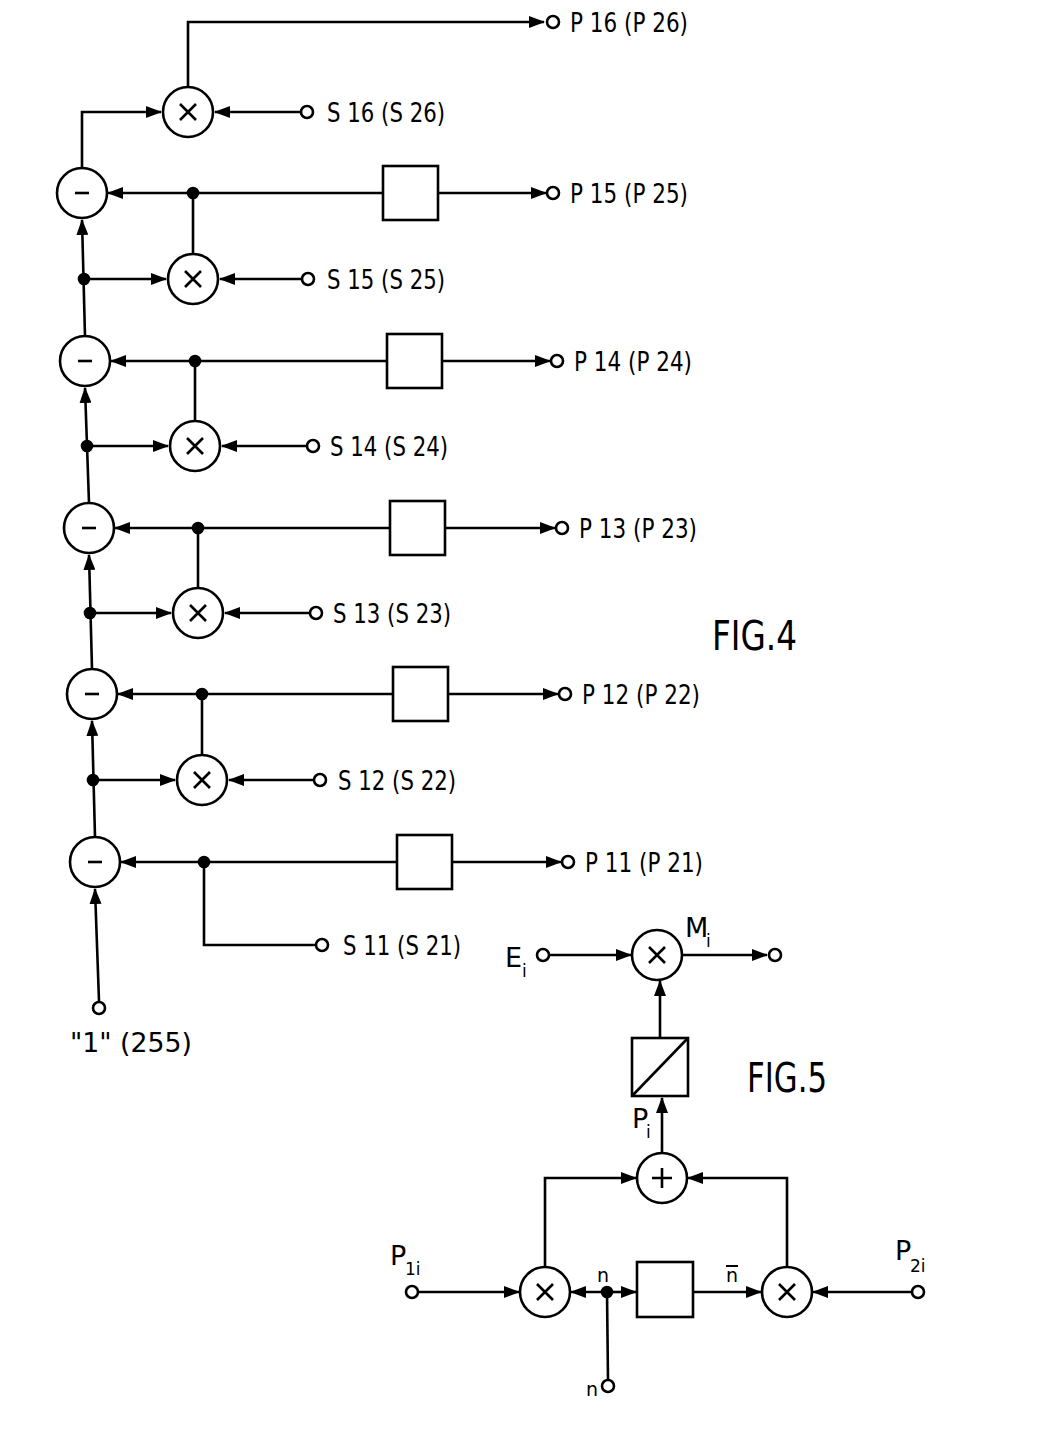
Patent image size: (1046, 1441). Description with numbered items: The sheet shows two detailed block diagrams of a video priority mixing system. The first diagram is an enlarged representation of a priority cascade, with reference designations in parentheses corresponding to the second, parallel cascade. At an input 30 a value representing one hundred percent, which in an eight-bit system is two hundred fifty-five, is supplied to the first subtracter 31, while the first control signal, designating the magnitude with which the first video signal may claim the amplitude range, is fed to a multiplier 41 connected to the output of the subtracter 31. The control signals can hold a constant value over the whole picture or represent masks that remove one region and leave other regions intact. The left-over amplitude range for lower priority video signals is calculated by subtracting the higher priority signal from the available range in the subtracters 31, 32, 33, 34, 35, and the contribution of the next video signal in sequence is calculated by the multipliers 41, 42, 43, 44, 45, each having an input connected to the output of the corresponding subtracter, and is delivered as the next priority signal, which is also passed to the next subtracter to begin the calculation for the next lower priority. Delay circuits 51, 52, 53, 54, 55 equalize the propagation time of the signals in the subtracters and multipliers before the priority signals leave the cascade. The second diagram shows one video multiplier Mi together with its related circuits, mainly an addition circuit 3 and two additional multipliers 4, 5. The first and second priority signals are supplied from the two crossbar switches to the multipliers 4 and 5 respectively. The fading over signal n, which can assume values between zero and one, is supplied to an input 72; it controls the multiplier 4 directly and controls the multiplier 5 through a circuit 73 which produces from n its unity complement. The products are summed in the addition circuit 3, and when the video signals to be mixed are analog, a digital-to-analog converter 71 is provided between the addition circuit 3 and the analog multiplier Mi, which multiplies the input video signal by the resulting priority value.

In FIG. 4, the input terminal for constant 1 (255) 30 is at (93, 1005).
In FIG. 4, the first subtracter 31 is at (70, 862).
In FIG. 4, the subtracter 32 is at (67, 694).
In FIG. 4, the subtracter 33 is at (64, 528).
In FIG. 4, the subtracter 34 is at (60, 361).
In FIG. 4, the subtracter 35 is at (57, 193).
In FIG. 4, the multiplier 41 is at (219, 763).
In FIG. 4, the multiplier 42 is at (217, 595).
In FIG. 4, the multiplier 43 is at (214, 428).
In FIG. 4, the multiplier 44 is at (212, 261).
In FIG. 4, the multiplier 45 is at (207, 94).
In FIG. 4, the delay circuit 51 is at (452, 857).
In FIG. 4, the delay circuit 52 is at (448, 689).
In FIG. 4, the delay circuit 53 is at (445, 523).
In FIG. 4, the delay circuit 54 is at (442, 356).
In FIG. 4, the delay circuit 55 is at (438, 188).
In FIG. 5, the addition circuit 3 is at (678, 1164).
In FIG. 5, the multiplier 4 is at (560, 1280).
In FIG. 5, the multiplier 5 is at (802, 1275).
In FIG. 5, the digital-to-analog converter 71 is at (676, 1063).
In FIG. 5, the input 72 is at (614, 1386).
In FIG. 5, the circuit 73 is at (681, 1275).